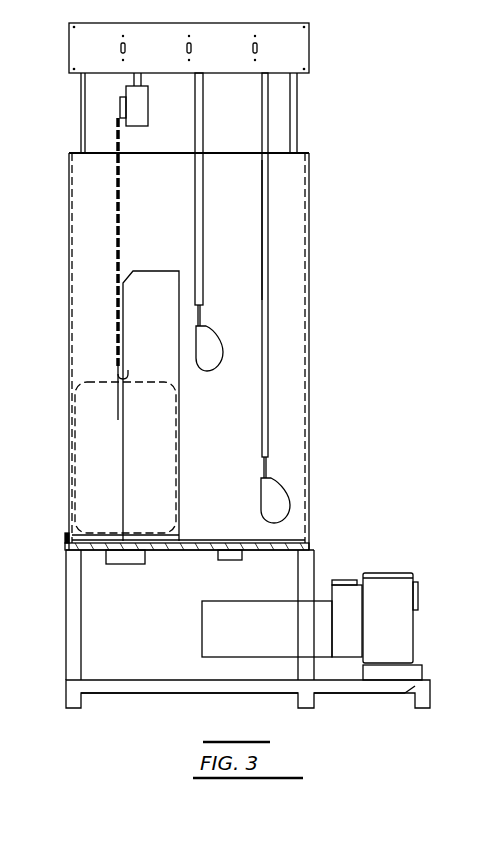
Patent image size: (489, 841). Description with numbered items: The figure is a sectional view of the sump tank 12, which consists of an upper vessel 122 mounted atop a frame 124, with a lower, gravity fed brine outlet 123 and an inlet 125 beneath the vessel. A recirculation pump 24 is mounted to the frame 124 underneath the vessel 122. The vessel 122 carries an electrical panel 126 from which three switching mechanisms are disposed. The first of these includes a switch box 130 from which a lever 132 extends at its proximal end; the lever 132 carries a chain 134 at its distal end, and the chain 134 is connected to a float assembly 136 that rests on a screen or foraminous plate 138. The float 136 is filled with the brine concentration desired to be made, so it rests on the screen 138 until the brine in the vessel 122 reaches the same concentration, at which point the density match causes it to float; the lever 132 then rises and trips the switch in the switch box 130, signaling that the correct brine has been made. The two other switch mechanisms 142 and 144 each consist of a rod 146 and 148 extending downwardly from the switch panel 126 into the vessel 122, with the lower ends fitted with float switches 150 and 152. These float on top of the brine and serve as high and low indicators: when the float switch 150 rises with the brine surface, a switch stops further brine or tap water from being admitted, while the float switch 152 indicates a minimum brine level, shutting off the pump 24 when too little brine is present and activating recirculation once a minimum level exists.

The sump tank 12 is at (315, 351).
The pump 24 is at (343, 587).
The upper vessel 122 is at (310, 420).
The gravity fed brine outlet 123 is at (228, 561).
The frame 124 is at (66, 643).
The inlet 125 is at (118, 565).
The electrical panel 126 is at (310, 40).
The switch box 130 is at (139, 126).
The lever 132 is at (120, 106).
The chain 134 is at (118, 256).
The float assembly 136 is at (93, 460).
The screen 138 is at (72, 532).
The switch mechanism 142 is at (212, 118).
The switch mechanism 144 is at (276, 308).
The rod 146 is at (204, 208).
The rod 148 is at (268, 243).
The float switch 150 is at (206, 362).
The float switch 152 is at (283, 500).